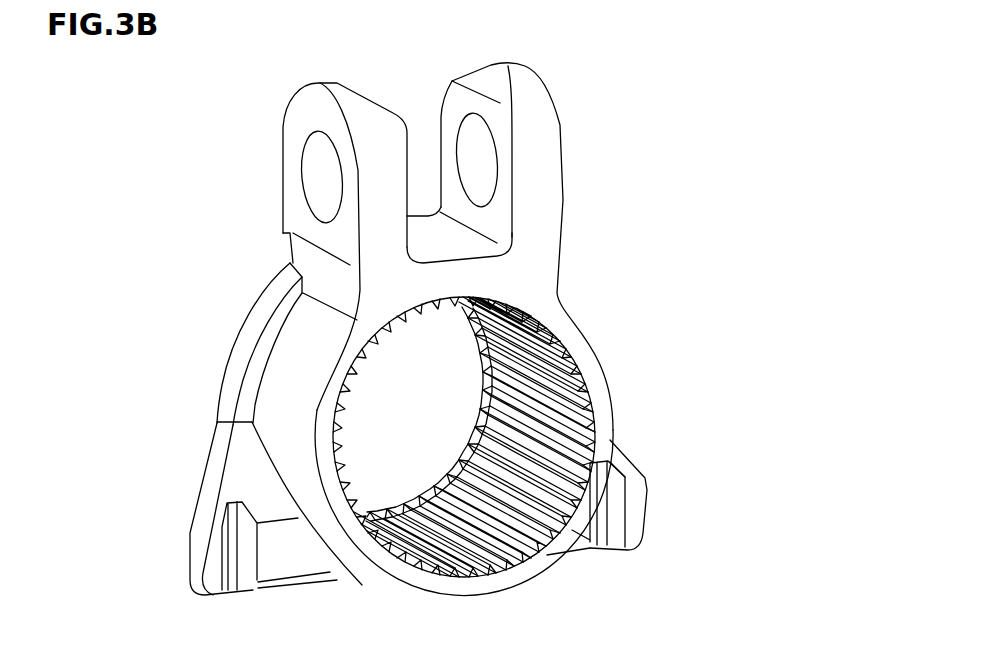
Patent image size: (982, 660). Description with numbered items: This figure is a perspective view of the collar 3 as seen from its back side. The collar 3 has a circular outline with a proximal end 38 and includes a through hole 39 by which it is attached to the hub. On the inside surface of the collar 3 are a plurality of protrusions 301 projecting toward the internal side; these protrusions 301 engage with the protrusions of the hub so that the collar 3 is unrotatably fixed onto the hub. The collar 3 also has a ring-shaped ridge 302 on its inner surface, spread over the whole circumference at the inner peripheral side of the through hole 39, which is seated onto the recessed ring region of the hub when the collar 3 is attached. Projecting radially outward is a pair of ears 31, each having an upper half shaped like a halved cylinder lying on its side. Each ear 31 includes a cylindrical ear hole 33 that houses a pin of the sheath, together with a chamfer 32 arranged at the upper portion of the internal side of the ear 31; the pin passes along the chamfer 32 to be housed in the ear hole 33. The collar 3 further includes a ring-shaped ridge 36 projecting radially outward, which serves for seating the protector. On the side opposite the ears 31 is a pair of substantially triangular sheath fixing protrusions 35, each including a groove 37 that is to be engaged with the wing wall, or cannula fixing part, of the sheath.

The collar 3 is at (634, 100).
The ear 31 is at (333, 84).
The chamfer 32 is at (485, 64).
The ear hole 33 is at (314, 160).
The sheath fixing protrusion 35 is at (243, 477).
The ring-shaped ridge 36 is at (248, 332).
The groove 37 is at (251, 560).
The proximal end 38 is at (493, 578).
The through hole 39 is at (468, 374).
The protrusions 301 is at (560, 407).
The ring-shaped ridge 302 is at (508, 400).